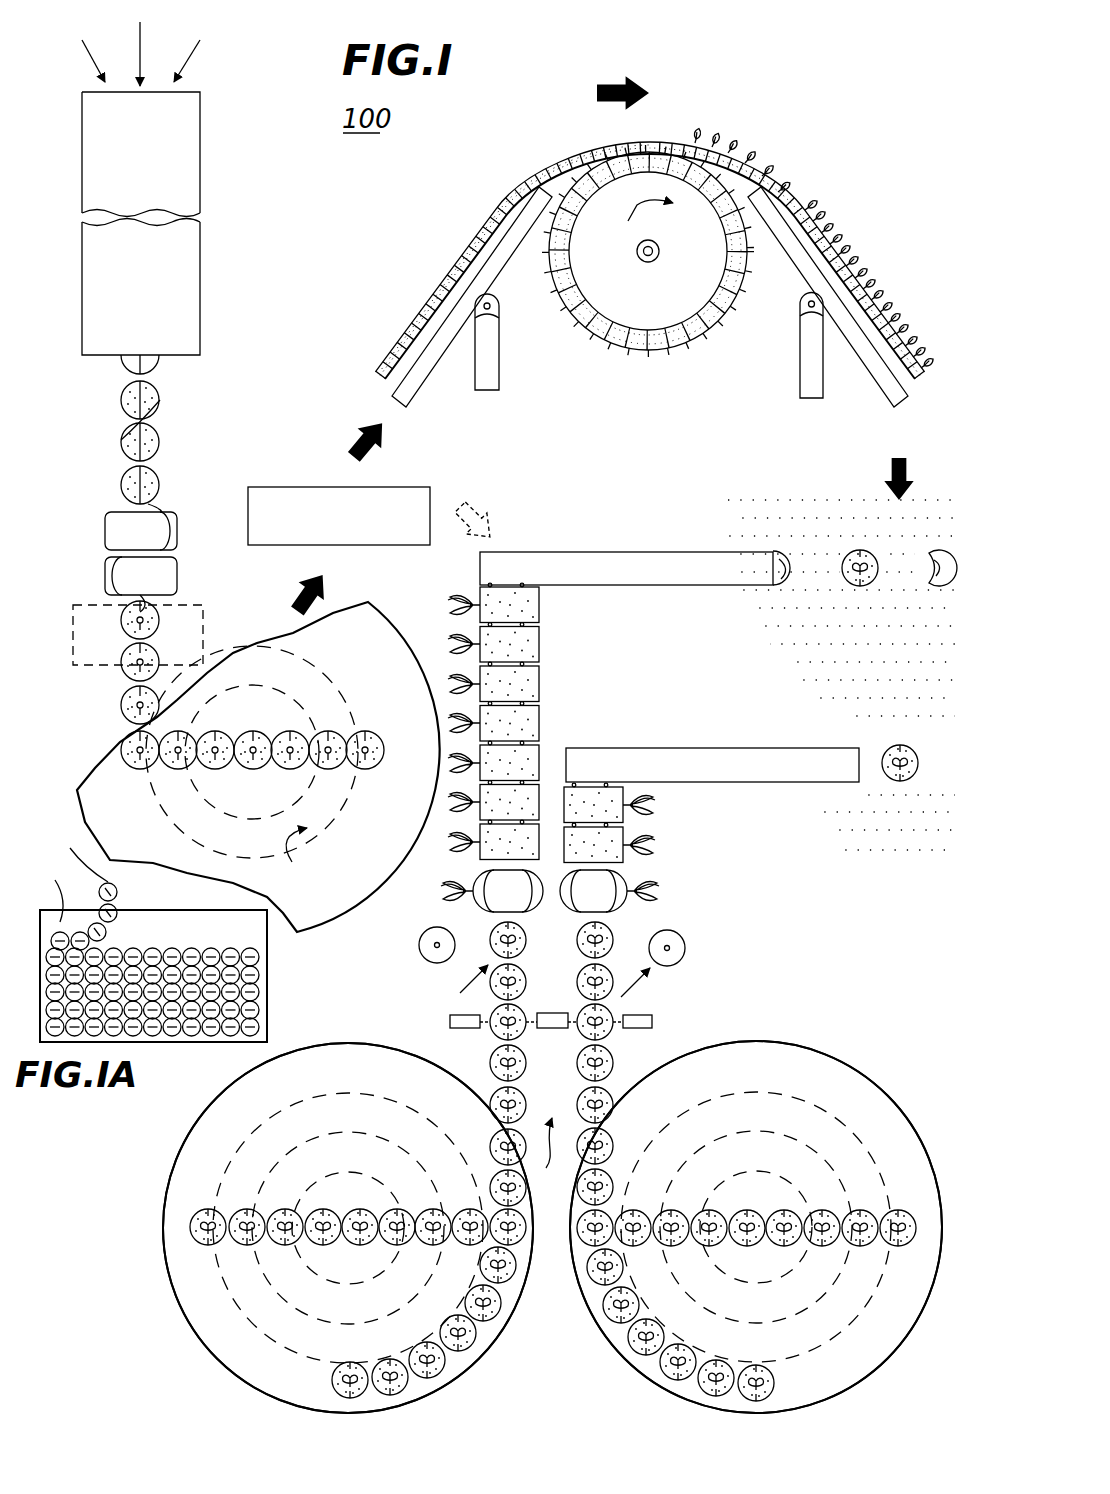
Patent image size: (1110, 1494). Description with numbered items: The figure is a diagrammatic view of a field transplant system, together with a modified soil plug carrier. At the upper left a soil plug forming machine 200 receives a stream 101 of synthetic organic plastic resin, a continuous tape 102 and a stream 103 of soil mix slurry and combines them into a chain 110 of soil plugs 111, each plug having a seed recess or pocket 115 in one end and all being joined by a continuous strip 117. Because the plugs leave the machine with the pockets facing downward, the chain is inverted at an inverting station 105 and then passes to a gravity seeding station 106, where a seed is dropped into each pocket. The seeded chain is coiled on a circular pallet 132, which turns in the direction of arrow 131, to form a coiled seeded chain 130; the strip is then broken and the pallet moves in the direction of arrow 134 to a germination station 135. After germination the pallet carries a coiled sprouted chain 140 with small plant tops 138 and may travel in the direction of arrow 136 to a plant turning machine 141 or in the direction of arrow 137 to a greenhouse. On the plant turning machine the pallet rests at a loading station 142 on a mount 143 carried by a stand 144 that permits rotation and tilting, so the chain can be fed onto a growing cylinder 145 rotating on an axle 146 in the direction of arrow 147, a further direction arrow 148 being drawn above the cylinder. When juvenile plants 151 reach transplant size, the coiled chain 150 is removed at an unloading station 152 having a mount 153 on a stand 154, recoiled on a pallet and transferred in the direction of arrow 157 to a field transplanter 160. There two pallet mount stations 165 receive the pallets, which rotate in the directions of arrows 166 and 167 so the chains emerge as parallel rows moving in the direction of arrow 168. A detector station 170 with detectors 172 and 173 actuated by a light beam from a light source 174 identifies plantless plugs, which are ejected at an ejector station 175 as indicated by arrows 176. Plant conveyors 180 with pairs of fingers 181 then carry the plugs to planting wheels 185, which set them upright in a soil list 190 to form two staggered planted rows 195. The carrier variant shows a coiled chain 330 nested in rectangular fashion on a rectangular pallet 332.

In FIG. 1, the stream of synthetic organic plastic resin 101 is at (84, 56).
In FIG. 1, the continuous tape 102 is at (140, 42).
In FIG. 1, the stream of soil mix slurry 103 is at (198, 48).
In FIG. 1, the inverting station 105 is at (100, 550).
In FIG. 1, the seeding station 106 is at (88, 668).
In FIG. 1, the chain of soil plugs 110 is at (166, 432).
In FIG. 1, the soil plug 111 is at (161, 399).
In FIG. 1A, the soil plug 111 is at (117, 913).
In FIG. 1, the seed recess or pocket 115 is at (146, 618).
In FIG. 1, the continuous strip 117 is at (121, 440).
In FIG. 1A, the continuous strip 117 is at (78, 854).
In FIG. 1, the coiled seeded chain of plugs 130 is at (374, 723).
In FIG. 1, the arrow indicating pallet turning direction 131 is at (185, 688).
In FIG. 1, the circular pallet or carrier 132 is at (385, 840).
In FIG. 1, the arrow indicating movement to germination station 134 is at (337, 593).
In FIG. 1, the germination station 135 is at (293, 486).
In FIG. 1, the arrow indicating movement to plant turning machine 136 is at (352, 431).
In FIG. 1, the arrow indicating movement to greenhouse 137 is at (484, 507).
In FIG. 1, the small plant tops 138 is at (447, 285).
In FIG. 1, the coiled sprouted chain of plugs 140 is at (460, 234).
In FIG. 1, the plant turning machine 141 is at (648, 358).
In FIG. 1, the loading station 142 is at (509, 331).
In FIG. 1, the mount 143 is at (429, 384).
In FIG. 1, the stand 144 is at (497, 378).
In FIG. 1, the growing cylinder 145 is at (632, 297).
In FIG. 1, the axle 146 is at (659, 255).
In FIG. 1, the arrow indicating cylinder rotation direction 147 is at (631, 222).
In FIG. 1, the travel direction arrow 148 is at (619, 80).
In FIG. 1, the coiled chain of plugs with transplant size plants 150 is at (775, 121).
In FIG. 1, the juvenile plants 151 is at (704, 122).
In FIG. 1, the unloading station 152 is at (795, 352).
In FIG. 1, the mount 153 is at (872, 380).
In FIG. 1, the stand 154 is at (805, 380).
In FIG. 1, the arrow indicating transfer to field transplanter 157 is at (863, 473).
In FIG. 1, the field transplanter 160 is at (716, 893).
In FIG. 1, the pallet mount stations 165 is at (150, 1211).
In FIG. 1, the arrow indicating pallet rotation direction 166 is at (258, 1150).
In FIG. 1, the arrow indicating pallet rotation direction 167 is at (583, 1292).
In FIG. 1, the arrow indicating row movement direction 168 is at (554, 1155).
In FIG. 1, the detector station 170 is at (674, 1013).
In FIG. 1, the detector 172 is at (450, 1020).
In FIG. 1, the detector 173 is at (630, 1028).
In FIG. 1, the light source 174 is at (550, 1013).
In FIG. 1, the ejector station 175 is at (418, 945).
In FIG. 1, the arrows indicating ejection 176 is at (554, 984).
In FIG. 1, the plant conveyors 180 is at (656, 831).
In FIG. 1, the pairs of fingers 181 is at (470, 878).
In FIG. 1, the planting wheels 185 is at (612, 550).
In FIG. 1, the soil list 190 is at (848, 527).
In FIG. 1, the planted rows 195 is at (865, 596).
In FIG. 1, the soil plug forming machine 200 is at (204, 246).
In FIG. 1A, the coiled chain 330 is at (270, 976).
In FIG. 1A, the rectangular pallet 332 is at (39, 895).